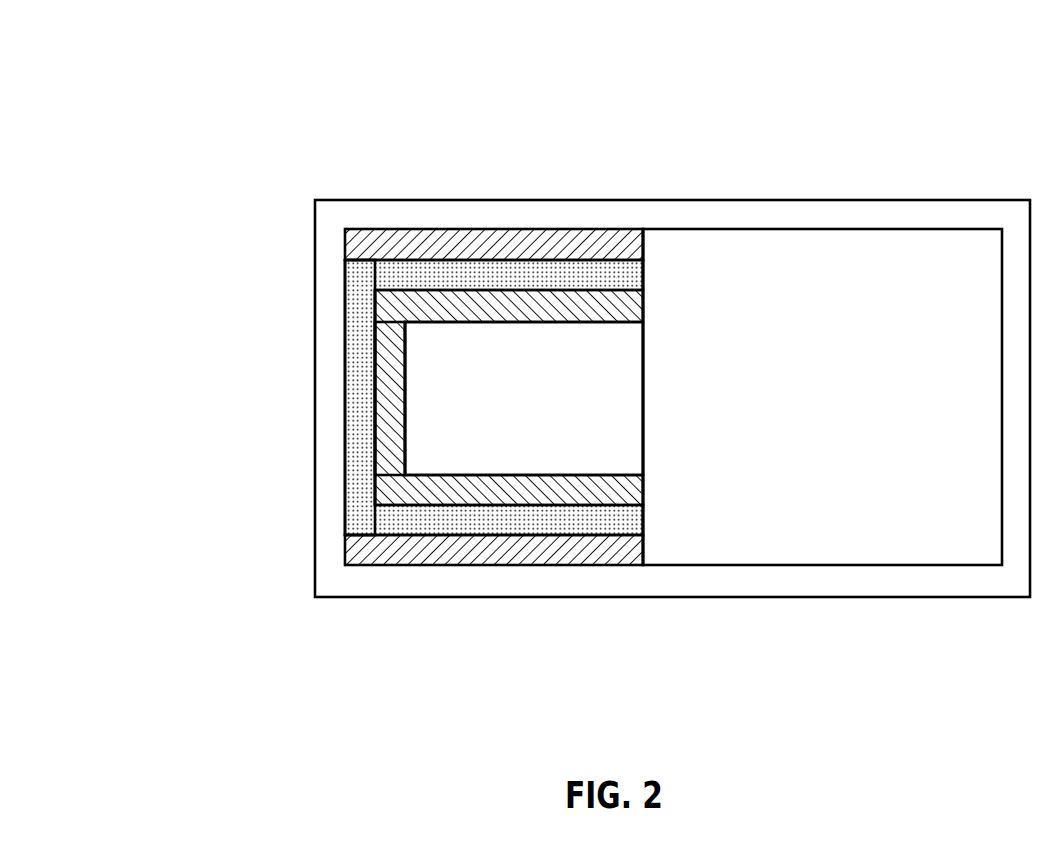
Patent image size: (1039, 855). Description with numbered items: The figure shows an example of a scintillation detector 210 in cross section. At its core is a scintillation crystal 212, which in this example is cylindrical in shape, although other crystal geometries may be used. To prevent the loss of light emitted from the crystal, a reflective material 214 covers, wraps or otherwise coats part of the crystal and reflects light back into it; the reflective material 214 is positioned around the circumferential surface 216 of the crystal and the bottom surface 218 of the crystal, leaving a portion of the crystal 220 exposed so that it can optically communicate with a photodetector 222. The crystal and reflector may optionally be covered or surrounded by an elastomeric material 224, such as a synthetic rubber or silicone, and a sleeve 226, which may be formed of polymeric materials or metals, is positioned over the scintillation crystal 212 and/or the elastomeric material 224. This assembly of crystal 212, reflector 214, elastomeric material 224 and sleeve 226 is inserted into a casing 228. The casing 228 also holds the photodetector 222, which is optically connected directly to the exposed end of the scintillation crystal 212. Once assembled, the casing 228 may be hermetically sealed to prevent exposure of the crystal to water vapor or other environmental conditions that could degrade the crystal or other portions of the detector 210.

The scintillation detector 210 is at (203, 64).
The scintillation crystal 212 is at (478, 443).
The reflective material 214 is at (372, 477).
The circumferential surface 216 is at (443, 317).
The bottom surface 218 is at (400, 398).
The exposed portion of the crystal 220 is at (644, 428).
The photodetector 222 is at (912, 528).
The elastomeric material 224 is at (516, 278).
The sleeve 226 is at (448, 238).
The casing 228 is at (703, 215).